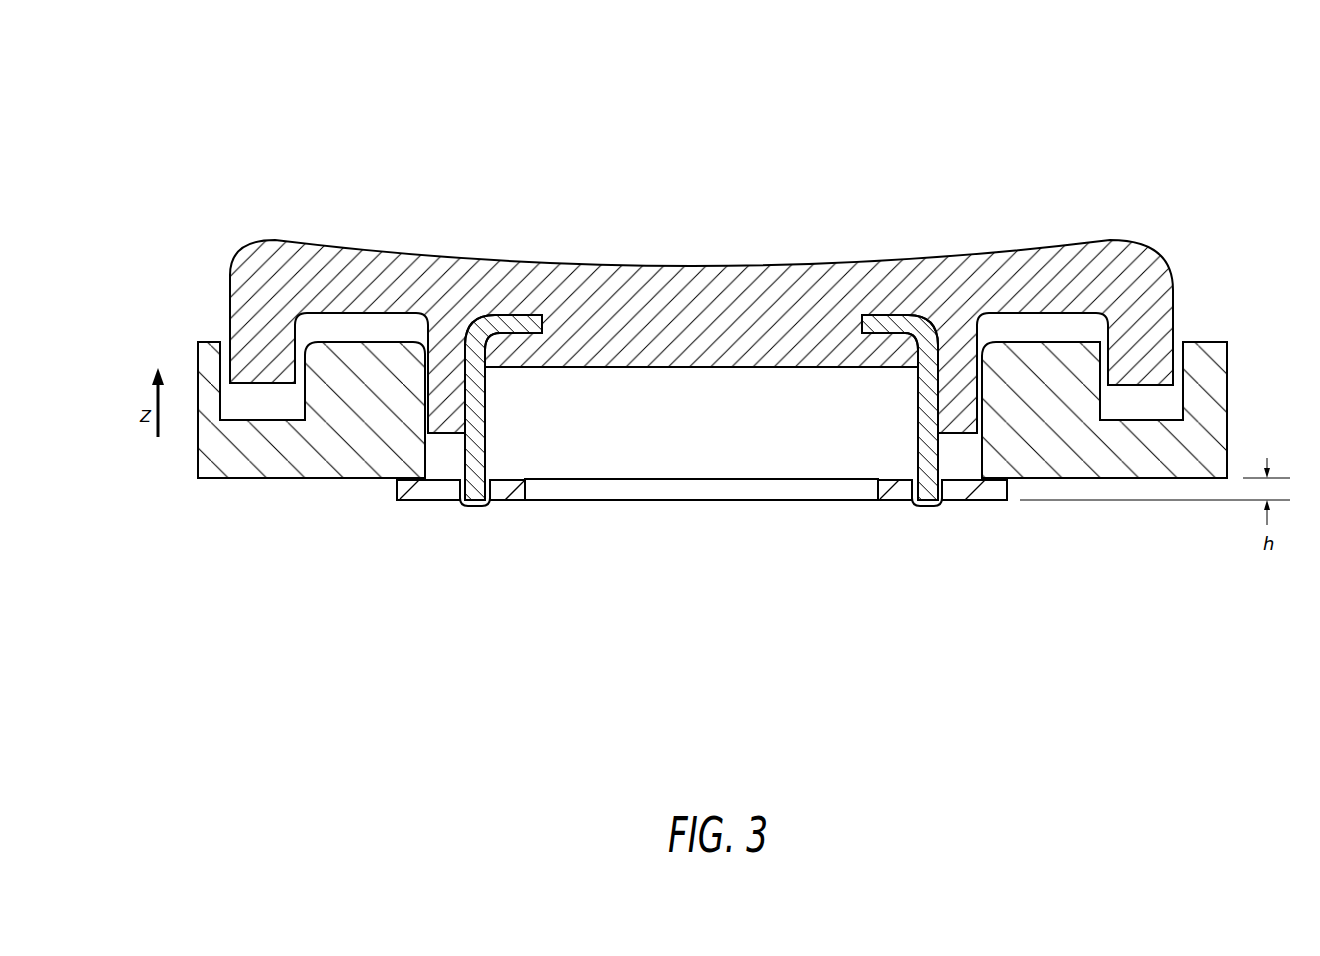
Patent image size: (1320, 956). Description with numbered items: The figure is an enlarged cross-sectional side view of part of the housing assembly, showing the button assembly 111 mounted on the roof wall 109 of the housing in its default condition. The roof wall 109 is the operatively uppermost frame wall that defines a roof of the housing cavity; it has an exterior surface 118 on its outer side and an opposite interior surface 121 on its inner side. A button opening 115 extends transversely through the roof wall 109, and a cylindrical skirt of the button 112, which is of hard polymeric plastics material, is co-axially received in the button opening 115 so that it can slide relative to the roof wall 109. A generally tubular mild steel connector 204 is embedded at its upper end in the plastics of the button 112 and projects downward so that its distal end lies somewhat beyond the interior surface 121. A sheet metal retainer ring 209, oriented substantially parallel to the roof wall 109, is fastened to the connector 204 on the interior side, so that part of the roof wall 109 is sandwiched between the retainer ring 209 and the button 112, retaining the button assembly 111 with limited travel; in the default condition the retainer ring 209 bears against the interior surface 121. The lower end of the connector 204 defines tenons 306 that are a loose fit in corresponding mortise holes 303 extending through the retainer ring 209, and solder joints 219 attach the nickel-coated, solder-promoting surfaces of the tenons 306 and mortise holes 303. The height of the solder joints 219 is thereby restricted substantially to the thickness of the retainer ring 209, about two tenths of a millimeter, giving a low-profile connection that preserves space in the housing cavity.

The button assembly 111 is at (452, 118).
The button 112 is at (887, 270).
The exterior surface 118 is at (212, 328).
The button opening 115 is at (406, 408).
The tubular connector 204 is at (473, 392).
The solder joints 219 is at (497, 485).
The tenons 306 is at (470, 505).
The mortise holes 303 is at (436, 490).
The retainer ring 209 is at (679, 488).
The interior surface 121 is at (213, 492).
The roof wall 109 is at (1190, 458).